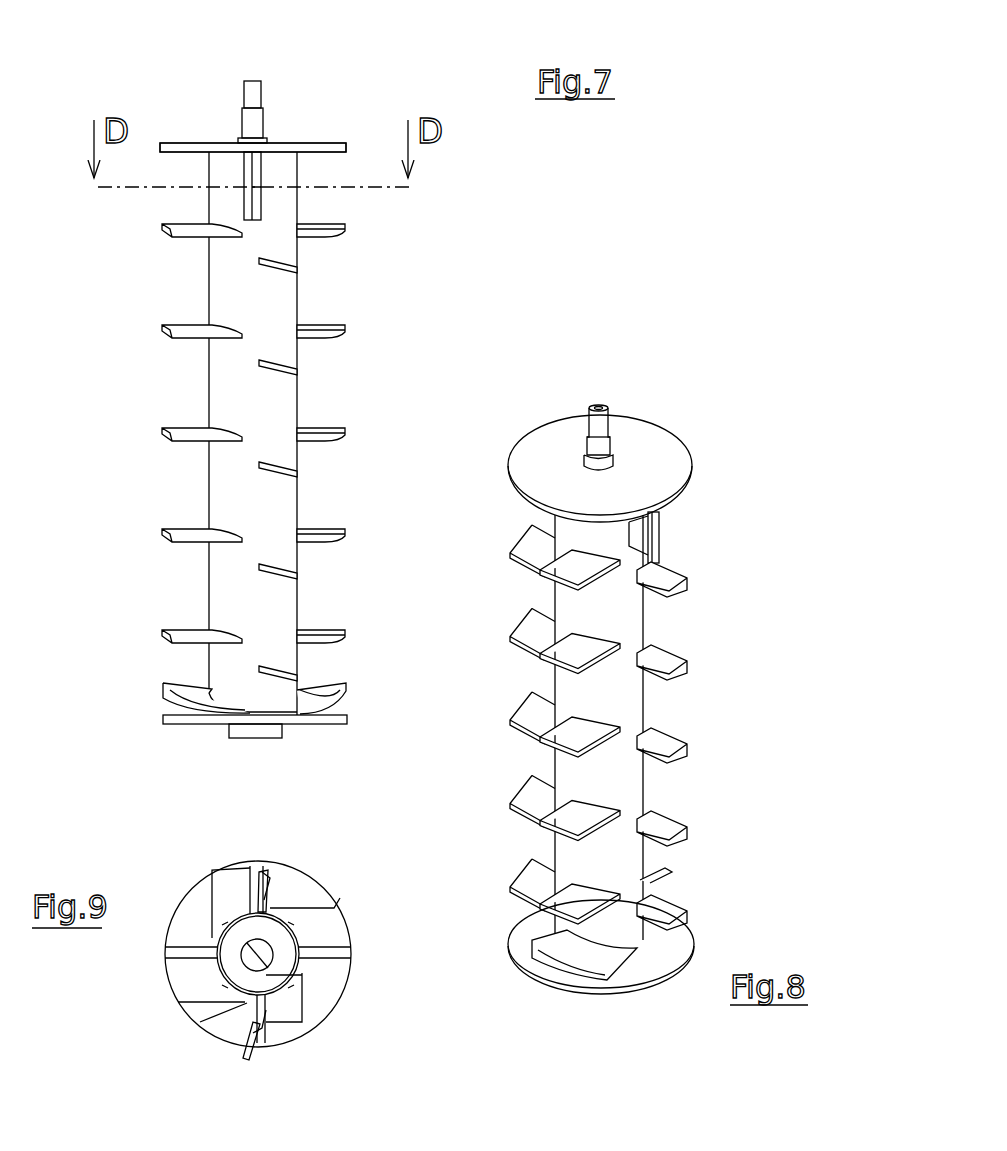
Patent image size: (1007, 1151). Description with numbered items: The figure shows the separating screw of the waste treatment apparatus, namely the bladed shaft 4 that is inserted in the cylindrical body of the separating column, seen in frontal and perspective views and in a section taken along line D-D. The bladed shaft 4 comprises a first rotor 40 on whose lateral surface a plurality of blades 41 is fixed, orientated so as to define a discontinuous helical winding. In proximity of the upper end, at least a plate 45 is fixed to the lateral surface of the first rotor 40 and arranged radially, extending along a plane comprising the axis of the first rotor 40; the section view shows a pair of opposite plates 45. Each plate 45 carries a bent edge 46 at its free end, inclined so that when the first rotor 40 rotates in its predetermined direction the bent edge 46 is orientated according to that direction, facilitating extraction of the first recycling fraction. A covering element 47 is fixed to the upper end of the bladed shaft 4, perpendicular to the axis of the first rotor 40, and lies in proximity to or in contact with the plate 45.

In FIG. 7, the bladed shaft 4 is at (387, 279).
In FIG. 8, the bladed shaft 4 is at (723, 428).
In FIG. 7, the first rotor 40 is at (230, 408).
In FIG. 8, the first rotor 40 is at (615, 785).
In FIG. 9, the first rotor 40 is at (280, 967).
In FIG. 7, the blades 41 is at (165, 245).
In FIG. 8, the blades 41 is at (513, 650).
In FIG. 9, the blades 41 is at (318, 932).
In FIG. 7, the plate 45 is at (265, 175).
In FIG. 8, the plate 45 is at (672, 525).
In FIG. 9, the plate 45 is at (270, 888).
In FIG. 7, the bent edge 46 is at (238, 172).
In FIG. 8, the bent edge 46 is at (657, 548).
In FIG. 9, the bent edge 46 is at (276, 860).
In FIG. 7, the covering element 47 is at (275, 143).
In FIG. 8, the covering element 47 is at (635, 435).